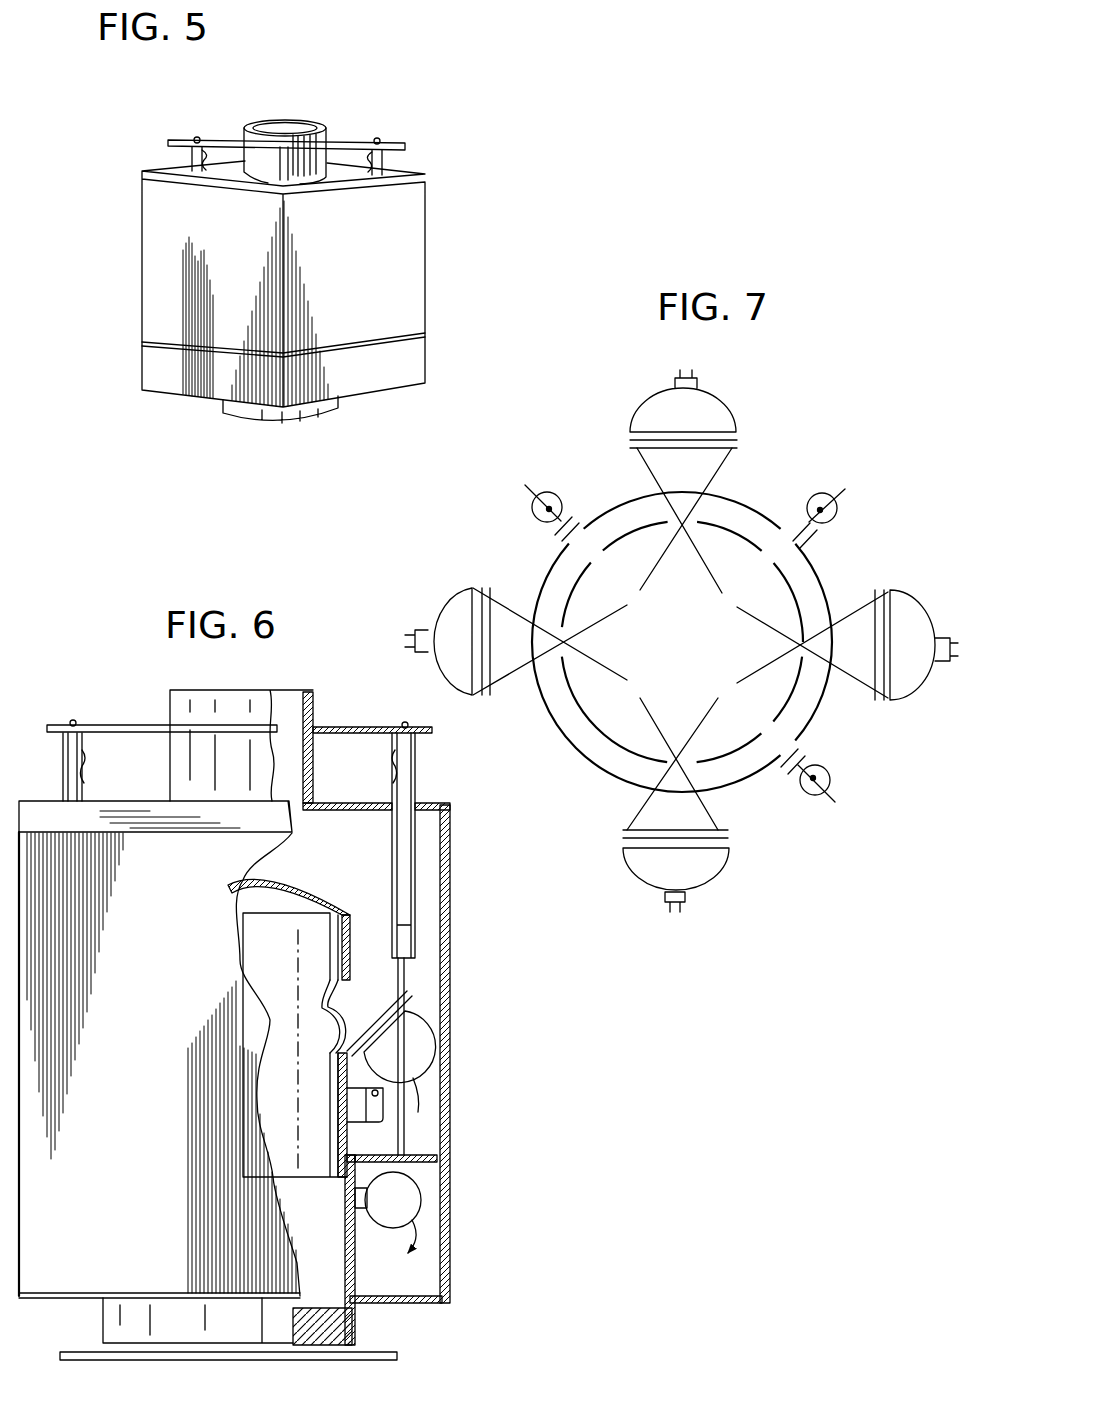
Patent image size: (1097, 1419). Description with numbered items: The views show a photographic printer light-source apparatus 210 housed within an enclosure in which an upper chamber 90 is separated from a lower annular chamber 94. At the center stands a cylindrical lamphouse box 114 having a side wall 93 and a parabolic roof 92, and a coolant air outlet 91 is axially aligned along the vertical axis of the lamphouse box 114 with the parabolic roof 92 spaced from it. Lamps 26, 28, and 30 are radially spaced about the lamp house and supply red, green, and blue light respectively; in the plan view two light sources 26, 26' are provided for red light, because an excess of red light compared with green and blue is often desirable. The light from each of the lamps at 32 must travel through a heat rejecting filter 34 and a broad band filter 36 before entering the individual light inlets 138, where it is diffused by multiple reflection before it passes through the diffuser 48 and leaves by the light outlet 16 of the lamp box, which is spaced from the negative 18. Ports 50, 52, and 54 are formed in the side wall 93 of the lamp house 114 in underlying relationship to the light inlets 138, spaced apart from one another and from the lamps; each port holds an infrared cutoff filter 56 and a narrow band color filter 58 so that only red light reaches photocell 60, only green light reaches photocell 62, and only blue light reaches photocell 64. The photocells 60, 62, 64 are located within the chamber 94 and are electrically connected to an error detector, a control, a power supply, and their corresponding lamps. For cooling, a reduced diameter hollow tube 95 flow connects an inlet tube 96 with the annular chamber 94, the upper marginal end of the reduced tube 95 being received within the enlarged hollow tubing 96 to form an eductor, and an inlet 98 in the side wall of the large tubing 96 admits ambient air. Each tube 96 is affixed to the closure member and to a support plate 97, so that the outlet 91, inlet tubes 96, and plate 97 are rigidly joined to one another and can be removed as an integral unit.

In FIG. 5, the light outlet 16 is at (338, 414).
In FIG. 6, the negative 18 is at (397, 1356).
In FIG. 7, the lamp 26 is at (501, 641).
In FIG. 7, the light source 26' is at (717, 805).
In FIG. 7, the lamp 28 is at (718, 408).
In FIG. 7, the lamp 30 is at (916, 612).
In FIG. 6, the lamp 30 is at (383, 1067).
In FIG. 6, the light from the lamps 32 is at (430, 1030).
In FIG. 7, the heat rejecting filter 34 is at (740, 442).
In FIG. 6, the heat rejecting filter 34 is at (433, 1047).
In FIG. 7, the broad band filter 36 is at (740, 453).
In FIG. 6, the broad band filter 36 is at (430, 1060).
In FIG. 6, the diffuser 48 is at (332, 1327).
In FIG. 7, the port 50 is at (578, 545).
In FIG. 7, the port 52 is at (762, 548).
In FIG. 7, the port 54 is at (782, 745).
In FIG. 6, the port 54 is at (343, 1207).
In FIG. 7, the infrared cutoff filter 56 is at (809, 542).
In FIG. 6, the infrared cutoff filter 56 is at (343, 1197).
In FIG. 7, the narrow band color filter 58 is at (809, 538).
In FIG. 6, the narrow band color filter 58 is at (338, 1193).
In FIG. 7, the photocell 60 is at (537, 517).
In FIG. 7, the photocell 62 is at (843, 507).
In FIG. 7, the photocell 64 is at (830, 780).
In FIG. 6, the photocell 64 is at (410, 1198).
In FIG. 6, the upper chamber 90 is at (426, 905).
In FIG. 5, the coolant air outlet 91 is at (328, 128).
In FIG. 6, the coolant air outlet 91 is at (245, 770).
In FIG. 6, the parabolic roof 92 is at (283, 887).
In FIG. 7, the side wall 93 is at (577, 755).
In FIG. 6, the side wall 93 is at (365, 1235).
In FIG. 6, the lower annular chamber 94 is at (427, 1270).
In FIG. 6, the reduced diameter hollow tube 95 is at (405, 1137).
In FIG. 5, the inlet tube 96 is at (188, 160).
In FIG. 6, the inlet tube 96 is at (60, 752).
In FIG. 5, the support plate 97 is at (402, 143).
In FIG. 6, the support plate 97 is at (95, 723).
In FIG. 5, the inlet 98 is at (208, 160).
In FIG. 6, the inlet 98 is at (85, 770).
In FIG. 7, the cylindrical lamphouse box 114 is at (798, 605).
In FIG. 6, the cylindrical lamphouse box 114 is at (352, 927).
In FIG. 7, the light inlets 138 is at (690, 522).
In FIG. 6, the light inlets 138 is at (324, 1006).
In FIG. 5, the apparatus 210 is at (440, 278).
In FIG. 6, the apparatus 210 is at (462, 975).